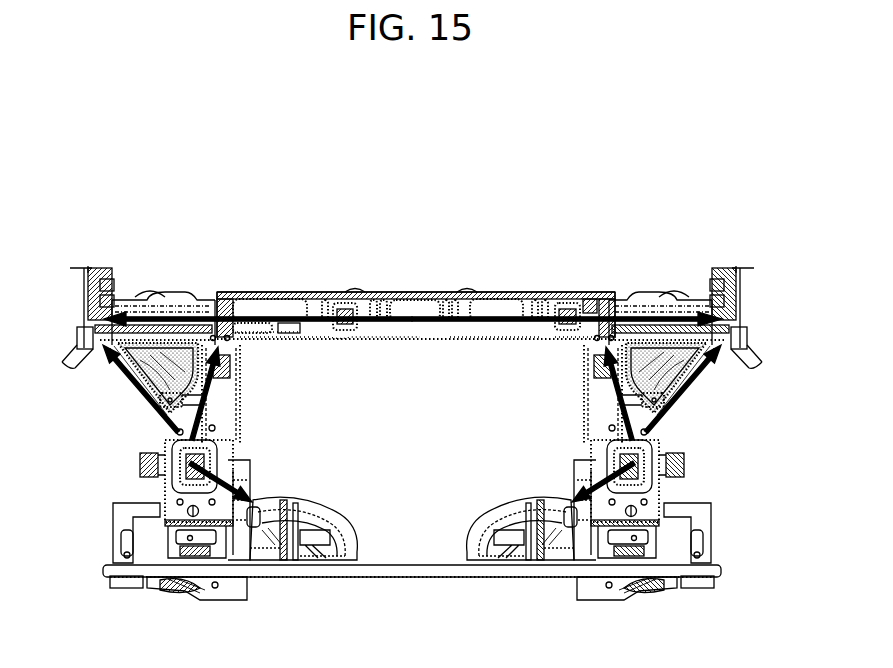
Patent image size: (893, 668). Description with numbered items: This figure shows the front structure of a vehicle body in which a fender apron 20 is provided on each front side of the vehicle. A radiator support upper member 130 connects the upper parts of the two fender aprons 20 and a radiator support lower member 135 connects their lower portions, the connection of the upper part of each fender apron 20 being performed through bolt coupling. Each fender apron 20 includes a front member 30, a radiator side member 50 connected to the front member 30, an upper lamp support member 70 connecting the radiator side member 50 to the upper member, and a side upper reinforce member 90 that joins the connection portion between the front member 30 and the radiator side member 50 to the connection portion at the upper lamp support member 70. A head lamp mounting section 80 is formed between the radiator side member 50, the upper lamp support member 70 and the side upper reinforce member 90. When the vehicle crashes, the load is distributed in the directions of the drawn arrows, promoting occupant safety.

The radiator support upper member 130 is at (418, 305).
The radiator support lower member 135 is at (410, 580).
The upper lamp support member 70 is at (133, 335).
The head lamp mounting section 80 is at (152, 409).
The side upper reinforce member 90 is at (100, 375).
The fender apron 20 is at (113, 399).
The radiator side member 50 is at (177, 510).
The front member 30 is at (292, 516).